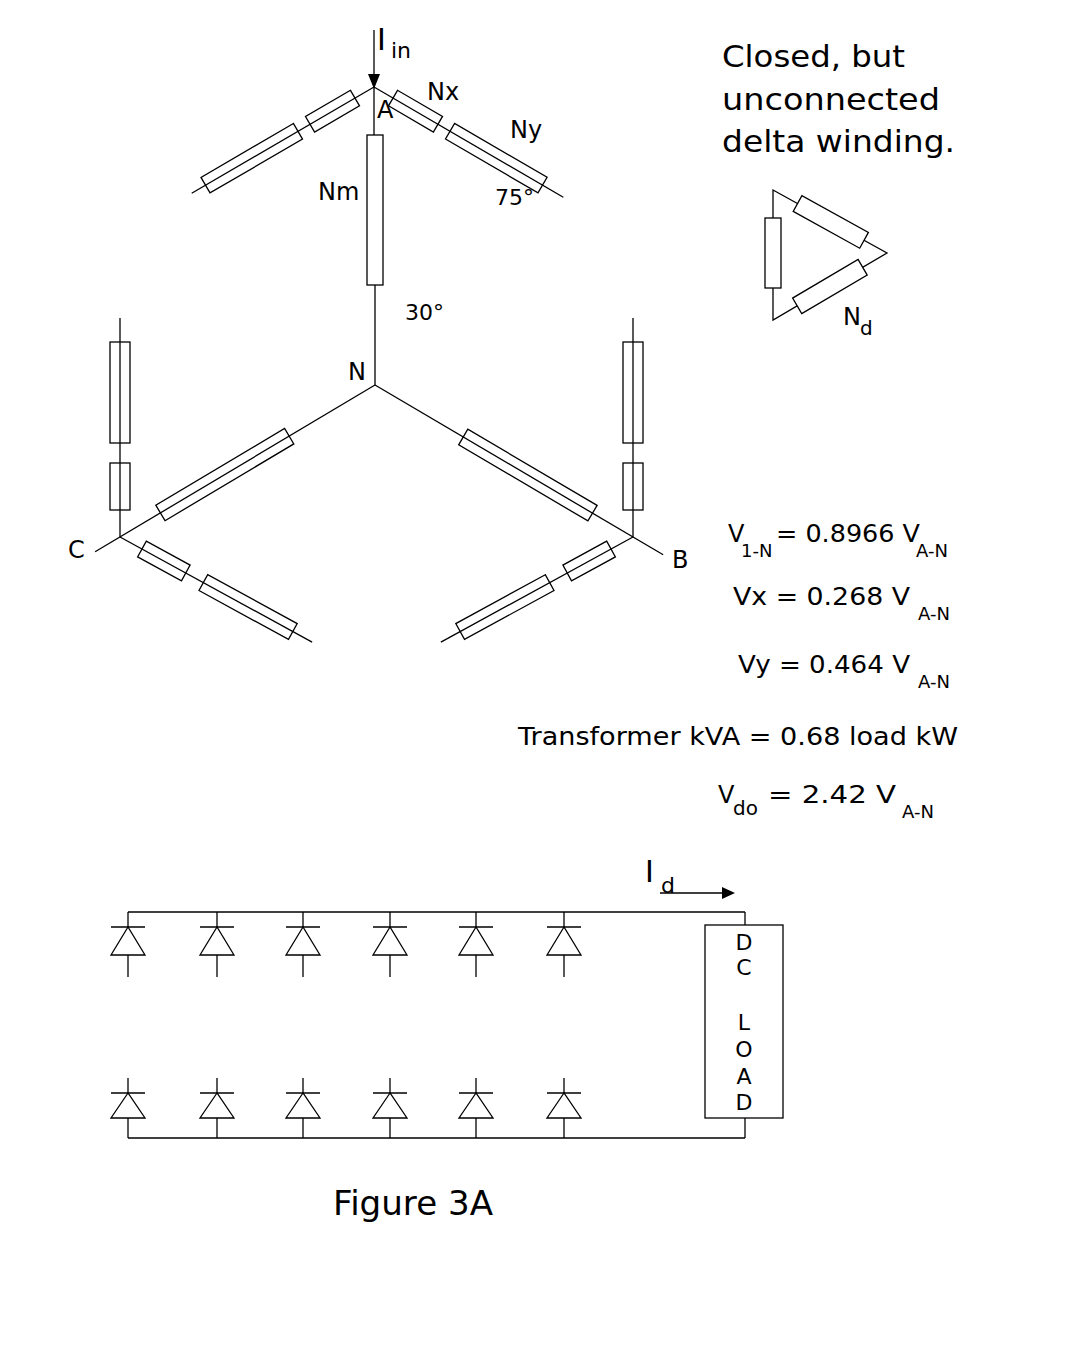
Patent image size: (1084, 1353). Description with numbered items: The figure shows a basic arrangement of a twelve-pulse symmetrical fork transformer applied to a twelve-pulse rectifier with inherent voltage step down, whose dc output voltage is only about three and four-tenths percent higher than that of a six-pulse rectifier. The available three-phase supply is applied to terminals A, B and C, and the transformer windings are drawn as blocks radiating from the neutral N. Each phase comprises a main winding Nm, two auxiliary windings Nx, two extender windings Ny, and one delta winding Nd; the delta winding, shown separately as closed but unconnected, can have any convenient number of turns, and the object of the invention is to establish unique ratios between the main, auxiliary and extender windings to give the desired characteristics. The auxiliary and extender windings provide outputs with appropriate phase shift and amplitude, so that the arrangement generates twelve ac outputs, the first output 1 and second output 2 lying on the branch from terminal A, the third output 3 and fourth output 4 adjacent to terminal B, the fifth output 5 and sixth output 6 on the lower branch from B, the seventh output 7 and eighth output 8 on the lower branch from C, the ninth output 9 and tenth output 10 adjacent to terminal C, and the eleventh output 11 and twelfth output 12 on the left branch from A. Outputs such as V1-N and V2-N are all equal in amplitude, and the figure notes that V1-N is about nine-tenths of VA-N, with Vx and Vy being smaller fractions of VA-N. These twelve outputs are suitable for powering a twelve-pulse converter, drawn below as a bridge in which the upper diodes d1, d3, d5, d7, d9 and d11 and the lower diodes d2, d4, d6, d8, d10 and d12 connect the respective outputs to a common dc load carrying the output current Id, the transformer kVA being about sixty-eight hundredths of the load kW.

The ac output 1 is at (375, 385).
The ac output 2 is at (375, 385).
The ac output 3 is at (375, 385).
The ac output 4 is at (375, 385).
The ac output 5 is at (375, 385).
The ac output 6 is at (375, 385).
The ac output 7 is at (375, 385).
The ac output 8 is at (375, 385).
The ac output 9 is at (375, 385).
The ac output 10 is at (375, 385).
The ac output 11 is at (375, 385).
The ac output 12 is at (375, 385).
The rectifier diode d1 is at (111, 960).
The rectifier diode d2 is at (111, 1092).
The rectifier diode d3 is at (200, 960).
The rectifier diode d4 is at (200, 1092).
The rectifier diode d5 is at (286, 960).
The rectifier diode d6 is at (286, 1092).
The rectifier diode d7 is at (373, 960).
The rectifier diode d8 is at (373, 1092).
The rectifier diode d9 is at (493, 960).
The rectifier diode d10 is at (501, 1092).
The rectifier diode d11 is at (589, 960).
The rectifier diode d12 is at (589, 1092).